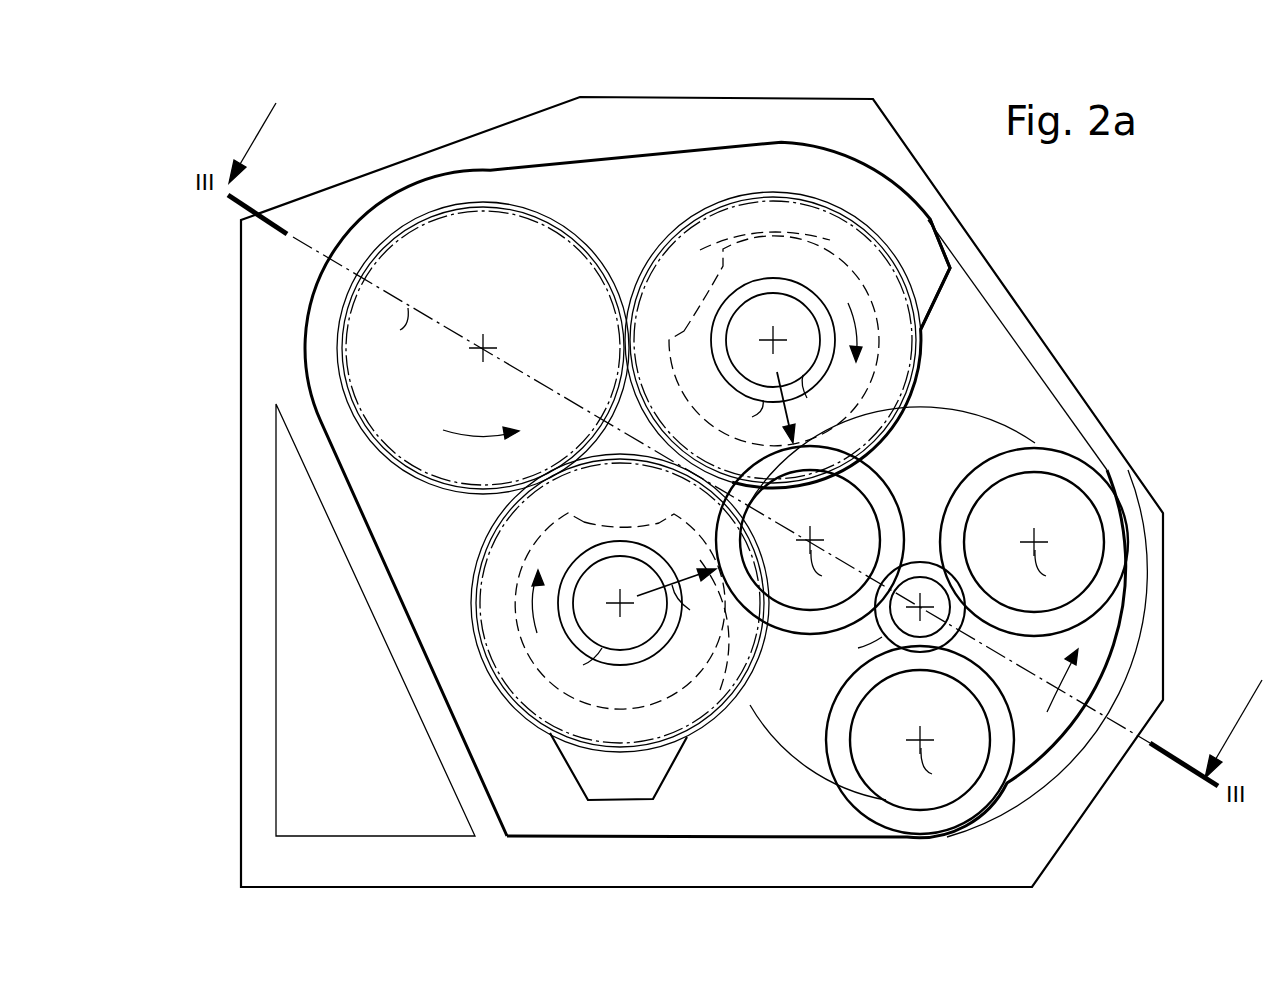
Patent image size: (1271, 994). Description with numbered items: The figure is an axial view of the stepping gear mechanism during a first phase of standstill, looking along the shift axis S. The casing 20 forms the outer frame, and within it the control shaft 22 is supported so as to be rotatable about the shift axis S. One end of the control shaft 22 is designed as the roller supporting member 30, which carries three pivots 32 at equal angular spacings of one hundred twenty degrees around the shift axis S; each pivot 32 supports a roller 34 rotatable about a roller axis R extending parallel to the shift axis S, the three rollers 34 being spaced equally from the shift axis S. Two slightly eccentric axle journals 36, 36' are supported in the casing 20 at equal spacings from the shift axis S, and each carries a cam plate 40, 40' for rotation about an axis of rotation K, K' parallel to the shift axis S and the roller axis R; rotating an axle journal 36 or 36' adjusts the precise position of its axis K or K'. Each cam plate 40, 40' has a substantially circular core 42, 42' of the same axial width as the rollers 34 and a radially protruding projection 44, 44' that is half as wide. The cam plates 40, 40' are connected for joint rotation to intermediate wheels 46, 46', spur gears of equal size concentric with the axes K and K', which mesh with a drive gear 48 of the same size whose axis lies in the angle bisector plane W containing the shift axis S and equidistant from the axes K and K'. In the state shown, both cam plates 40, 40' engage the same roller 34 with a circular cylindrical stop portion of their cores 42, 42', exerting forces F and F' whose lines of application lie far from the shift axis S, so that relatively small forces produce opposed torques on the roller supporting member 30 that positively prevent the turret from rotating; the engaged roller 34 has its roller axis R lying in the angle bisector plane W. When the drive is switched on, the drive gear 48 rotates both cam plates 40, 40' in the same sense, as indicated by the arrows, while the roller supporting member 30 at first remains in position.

The casing 20 is at (262, 830).
The control shaft 22 is at (915, 563).
The roller supporting member 30 is at (1040, 738).
The pivot 32 is at (877, 763).
The roller 34 is at (882, 486).
The axle journal 36 is at (785, 286).
The axle journal 36' is at (641, 666).
The cam plate 40 is at (773, 274).
The cam plate 40' is at (572, 603).
The core 42 is at (746, 326).
The core 42' is at (575, 611).
The projection 44 is at (965, 270).
The projection 44' is at (601, 767).
The intermediate wheel 46 is at (743, 155).
The intermediate wheel 46' is at (735, 662).
The drive gear 48 is at (433, 230).
The angle bisector plane W is at (388, 329).
The roller axis R is at (943, 667).
The shift axis S is at (861, 651).
The force F is at (765, 407).
The force F' is at (676, 598).
The axis of rotation K is at (815, 399).
The axis of rotation K' is at (579, 667).